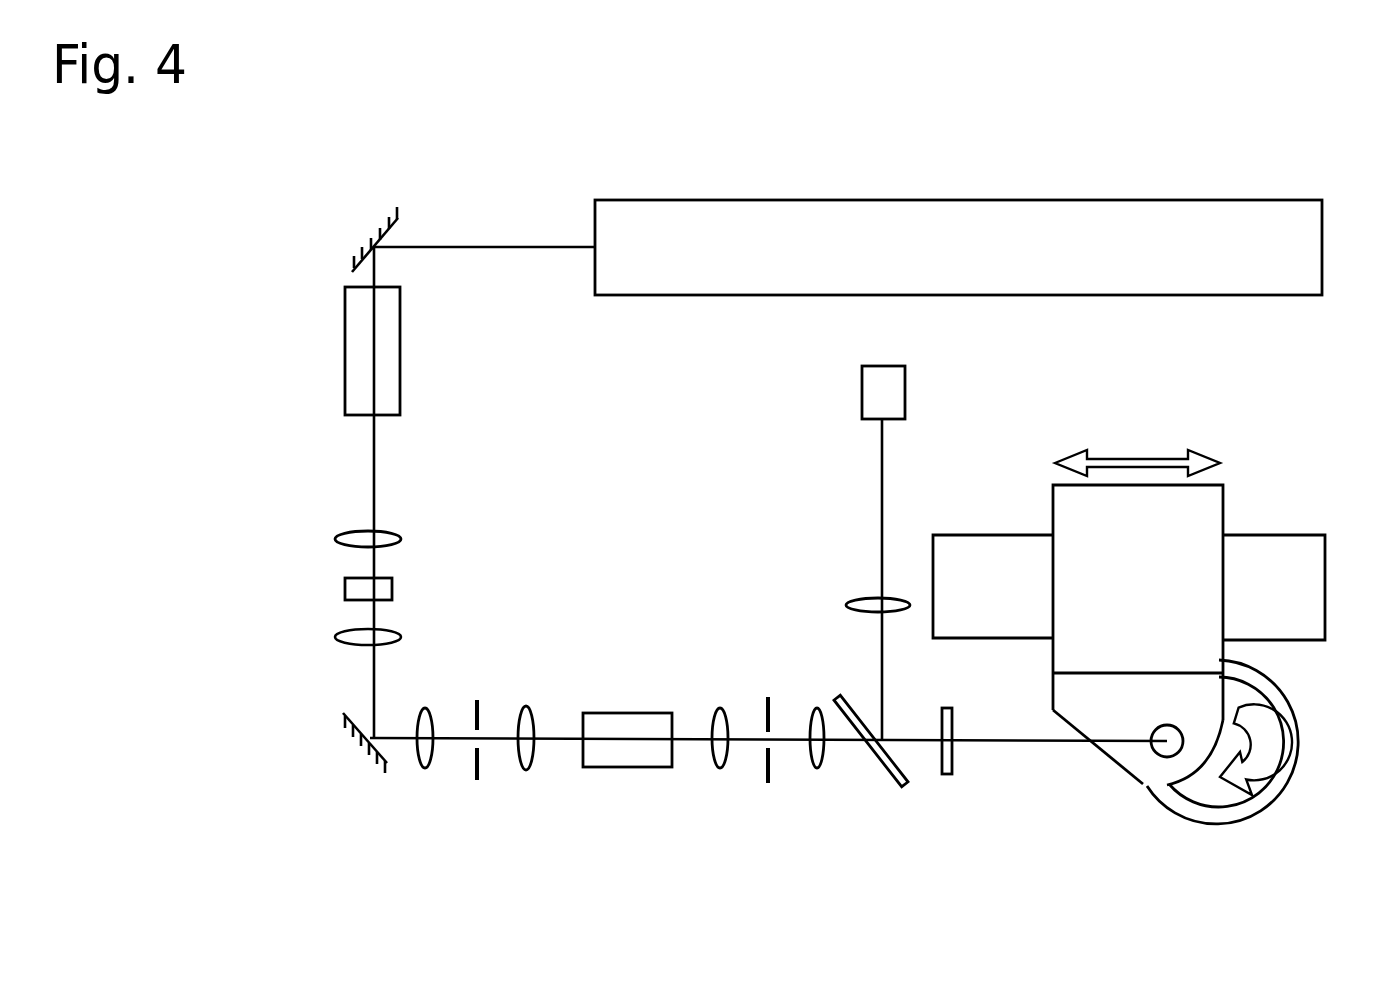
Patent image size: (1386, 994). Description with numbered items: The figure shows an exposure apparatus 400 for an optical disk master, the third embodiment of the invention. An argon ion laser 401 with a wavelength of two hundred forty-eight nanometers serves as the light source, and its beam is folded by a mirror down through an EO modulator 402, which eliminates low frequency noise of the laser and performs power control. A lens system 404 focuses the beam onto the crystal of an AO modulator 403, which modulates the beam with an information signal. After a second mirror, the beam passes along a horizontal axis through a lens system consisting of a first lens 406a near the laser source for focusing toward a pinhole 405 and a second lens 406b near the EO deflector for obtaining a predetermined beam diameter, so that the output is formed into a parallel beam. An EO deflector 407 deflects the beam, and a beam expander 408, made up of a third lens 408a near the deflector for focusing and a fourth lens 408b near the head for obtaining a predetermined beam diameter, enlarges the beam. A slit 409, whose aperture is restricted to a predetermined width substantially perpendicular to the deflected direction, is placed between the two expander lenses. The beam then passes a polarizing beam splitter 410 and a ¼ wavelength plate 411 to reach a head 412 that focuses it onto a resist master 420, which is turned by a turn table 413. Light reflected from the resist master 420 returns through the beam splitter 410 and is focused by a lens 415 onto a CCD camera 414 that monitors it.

The exposure apparatus 400 is at (907, 72).
The argon ion laser 401 is at (1178, 200).
The EO modulator 402 is at (400, 400).
The AO modulator 403 is at (392, 590).
The lens system 404 is at (396, 535).
The pinhole 405 is at (477, 780).
The first lens 406a is at (425, 706).
The second lens 406b is at (526, 706).
The EO deflector 407 is at (618, 767).
The beam expander 408 is at (767, 759).
The third lens 408a is at (713, 770).
The fourth lens 408b is at (815, 770).
The slit 409 is at (768, 783).
The polarizing beam splitter 410 is at (888, 775).
The ¼ wavelength plate 411 is at (947, 775).
The head 412 is at (1215, 497).
The turn table 413 is at (1170, 803).
The CCD camera 414 is at (862, 393).
The lens 415 is at (850, 600).
The resist master 420 is at (1245, 697).